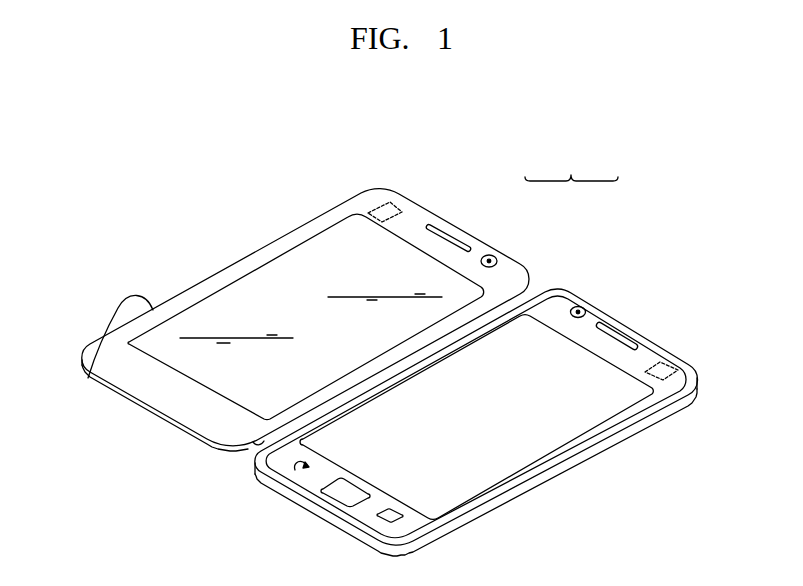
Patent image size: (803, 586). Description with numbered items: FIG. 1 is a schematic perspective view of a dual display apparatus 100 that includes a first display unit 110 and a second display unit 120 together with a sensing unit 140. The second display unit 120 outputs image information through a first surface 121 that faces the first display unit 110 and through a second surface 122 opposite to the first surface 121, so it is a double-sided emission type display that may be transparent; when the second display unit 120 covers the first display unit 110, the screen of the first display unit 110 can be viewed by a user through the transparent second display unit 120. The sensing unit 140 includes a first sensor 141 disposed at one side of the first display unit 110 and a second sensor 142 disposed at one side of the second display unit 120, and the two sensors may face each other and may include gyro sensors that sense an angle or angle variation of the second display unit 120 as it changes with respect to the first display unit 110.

The dual display apparatus 100 is at (627, 147).
The first display unit 110 is at (542, 417).
The second display unit 120 is at (297, 272).
The first surface 121 is at (223, 388).
The second surface 122 is at (85, 380).
The sensing unit 140 is at (571, 163).
The first sensor 141 is at (665, 363).
The second sensor 142 is at (392, 213).